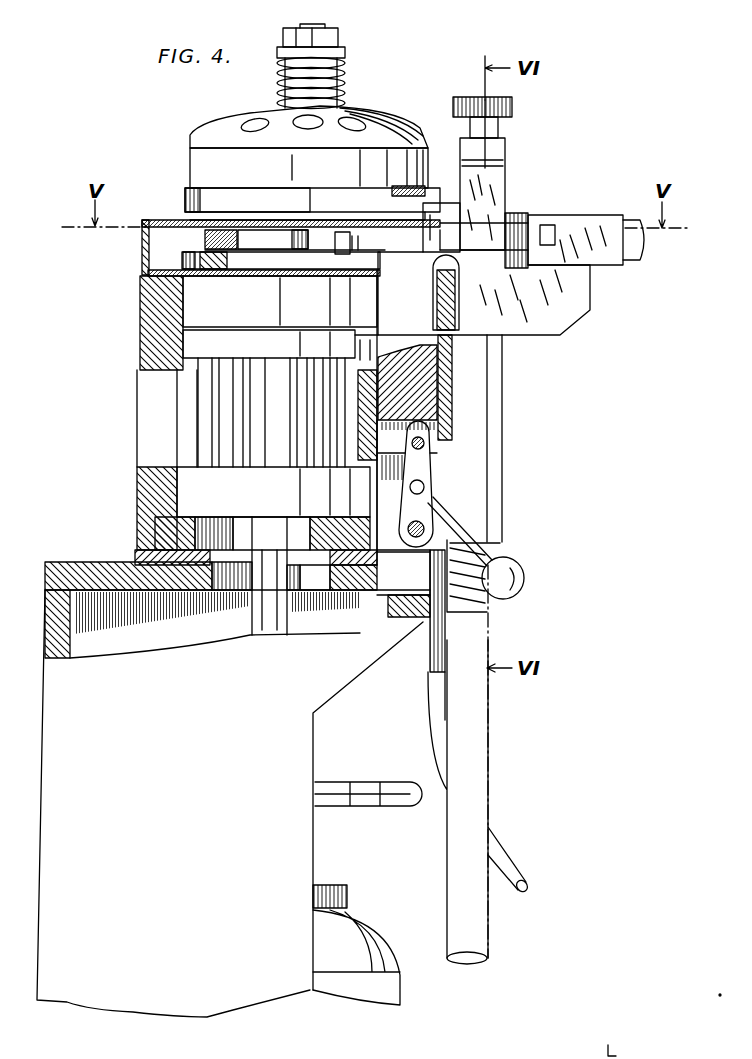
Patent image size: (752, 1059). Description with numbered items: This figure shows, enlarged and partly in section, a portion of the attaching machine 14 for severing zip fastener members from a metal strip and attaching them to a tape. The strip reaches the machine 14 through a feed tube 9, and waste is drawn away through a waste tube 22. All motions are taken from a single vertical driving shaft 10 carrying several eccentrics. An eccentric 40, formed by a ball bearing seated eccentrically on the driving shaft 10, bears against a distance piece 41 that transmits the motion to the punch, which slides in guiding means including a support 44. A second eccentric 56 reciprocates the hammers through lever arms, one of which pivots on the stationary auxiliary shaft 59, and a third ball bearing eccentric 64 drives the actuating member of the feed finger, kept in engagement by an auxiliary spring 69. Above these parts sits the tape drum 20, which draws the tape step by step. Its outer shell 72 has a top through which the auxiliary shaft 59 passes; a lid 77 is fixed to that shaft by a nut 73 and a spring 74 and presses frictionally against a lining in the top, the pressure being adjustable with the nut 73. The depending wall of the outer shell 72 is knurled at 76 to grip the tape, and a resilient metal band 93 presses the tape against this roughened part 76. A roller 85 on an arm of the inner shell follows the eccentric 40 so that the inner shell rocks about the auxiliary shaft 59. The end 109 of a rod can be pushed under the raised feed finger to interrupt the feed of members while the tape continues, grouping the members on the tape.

The auxiliary shaft 59 is at (302, 27).
The nut 73 is at (343, 50).
The spring 74 is at (345, 77).
The lid 77 is at (380, 130).
The tape drum 20 is at (186, 175).
The outer shell 72 is at (408, 180).
The knurled part 76 is at (428, 195).
The resilient metal band 93 is at (205, 201).
The eccentric 40 is at (262, 242).
The distance piece 41 is at (326, 240).
The roller 85 is at (149, 244).
The second eccentric 56 is at (258, 266).
The third ball bearing eccentric 64 is at (200, 345).
The attaching machine 14 is at (126, 421).
The driving shaft 10 is at (260, 628).
The support 44 is at (421, 239).
The auxiliary spring 69 is at (372, 342).
The end of rod 109 is at (442, 365).
The waste tube 22 is at (493, 550).
The feed tube 9 is at (440, 668).